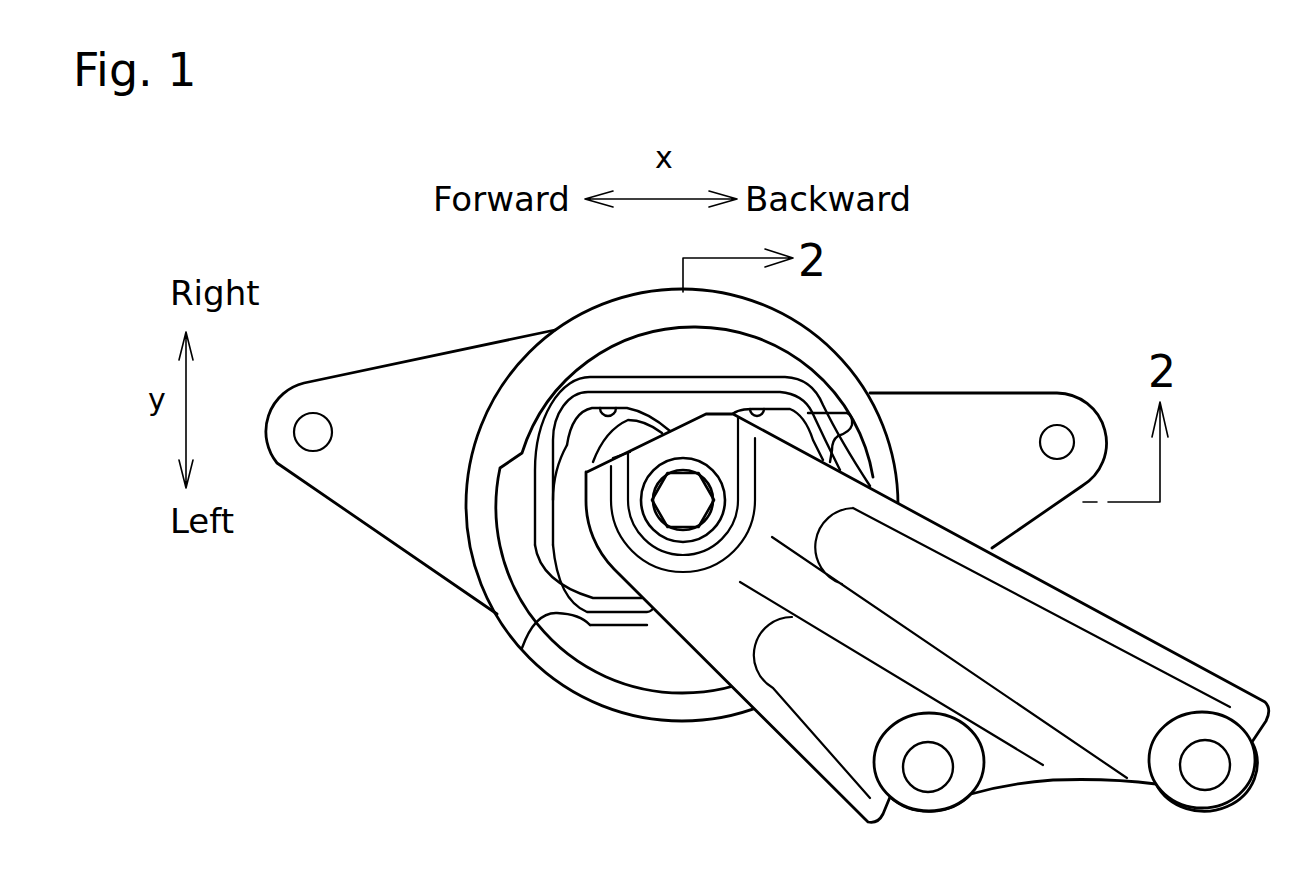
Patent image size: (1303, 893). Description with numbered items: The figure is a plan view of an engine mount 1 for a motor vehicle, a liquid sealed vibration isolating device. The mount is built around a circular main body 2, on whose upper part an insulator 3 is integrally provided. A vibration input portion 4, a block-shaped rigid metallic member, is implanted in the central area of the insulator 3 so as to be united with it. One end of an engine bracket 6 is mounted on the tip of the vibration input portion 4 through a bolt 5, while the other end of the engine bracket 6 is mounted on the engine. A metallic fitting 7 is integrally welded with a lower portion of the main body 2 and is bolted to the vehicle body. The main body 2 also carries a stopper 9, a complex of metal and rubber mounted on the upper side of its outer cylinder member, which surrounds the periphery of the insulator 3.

The engine mount 1 is at (385, 273).
The main body 2 is at (526, 312).
The insulator 3 is at (703, 407).
The vibration input portion 4 is at (602, 577).
The bolt 5 is at (680, 520).
The engine bracket 6 is at (1032, 628).
The metallic fitting 7 is at (357, 483).
The stopper 9 is at (630, 637).